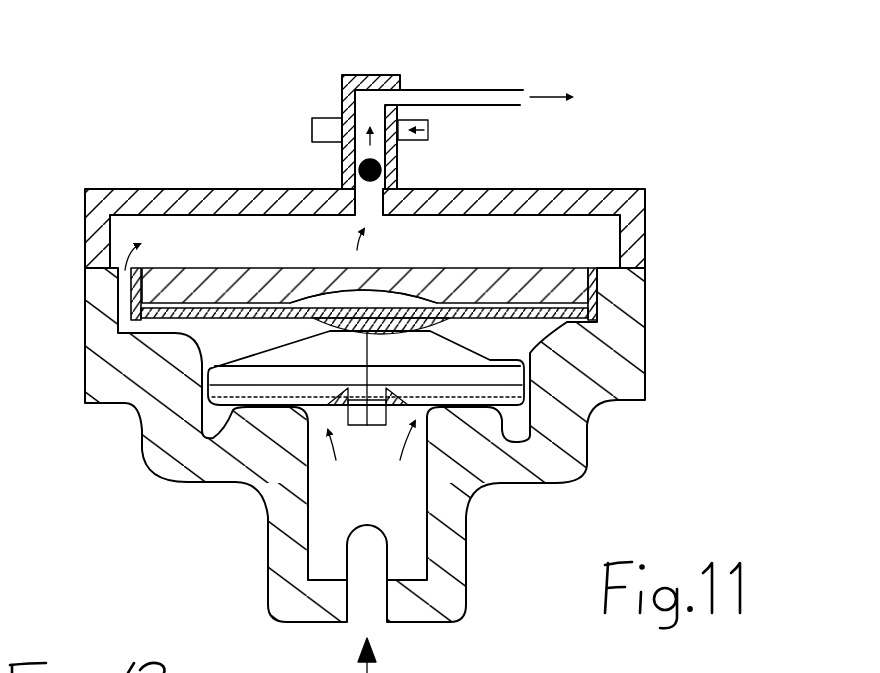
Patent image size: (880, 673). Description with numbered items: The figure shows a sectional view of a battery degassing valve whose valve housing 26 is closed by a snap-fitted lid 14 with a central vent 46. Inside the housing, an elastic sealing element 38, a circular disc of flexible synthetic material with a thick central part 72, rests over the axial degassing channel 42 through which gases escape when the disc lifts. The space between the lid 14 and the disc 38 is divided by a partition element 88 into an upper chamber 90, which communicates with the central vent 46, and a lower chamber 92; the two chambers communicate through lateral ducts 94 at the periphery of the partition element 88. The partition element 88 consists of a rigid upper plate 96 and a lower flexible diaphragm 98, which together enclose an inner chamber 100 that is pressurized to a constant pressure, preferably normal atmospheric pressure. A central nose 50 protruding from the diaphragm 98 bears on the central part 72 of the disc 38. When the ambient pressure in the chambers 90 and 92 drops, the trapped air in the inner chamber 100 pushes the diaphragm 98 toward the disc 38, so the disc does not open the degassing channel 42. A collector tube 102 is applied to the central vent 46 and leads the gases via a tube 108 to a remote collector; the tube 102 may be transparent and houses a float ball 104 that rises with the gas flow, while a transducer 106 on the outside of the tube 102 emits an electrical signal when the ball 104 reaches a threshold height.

The lid 14 is at (586, 201).
The valve housing 26 is at (187, 443).
The sealing element 38 is at (298, 382).
The axial degassing channel 42 is at (363, 553).
The central vent 46 is at (372, 205).
The central nose 50 is at (335, 316).
The central part 72 is at (427, 347).
The partition element 88 is at (560, 255).
The upper chamber 90 is at (603, 237).
The lower chamber 92 is at (520, 340).
The lateral ducts 94 is at (123, 288).
The rigid upper plate 96 is at (590, 316).
The flexible diaphragm 98 is at (590, 297).
The inner chamber 100 is at (338, 298).
The collector tube 102 is at (365, 77).
The float ball 104 is at (360, 170).
The transducer 106 is at (320, 128).
The tube 108 is at (494, 93).